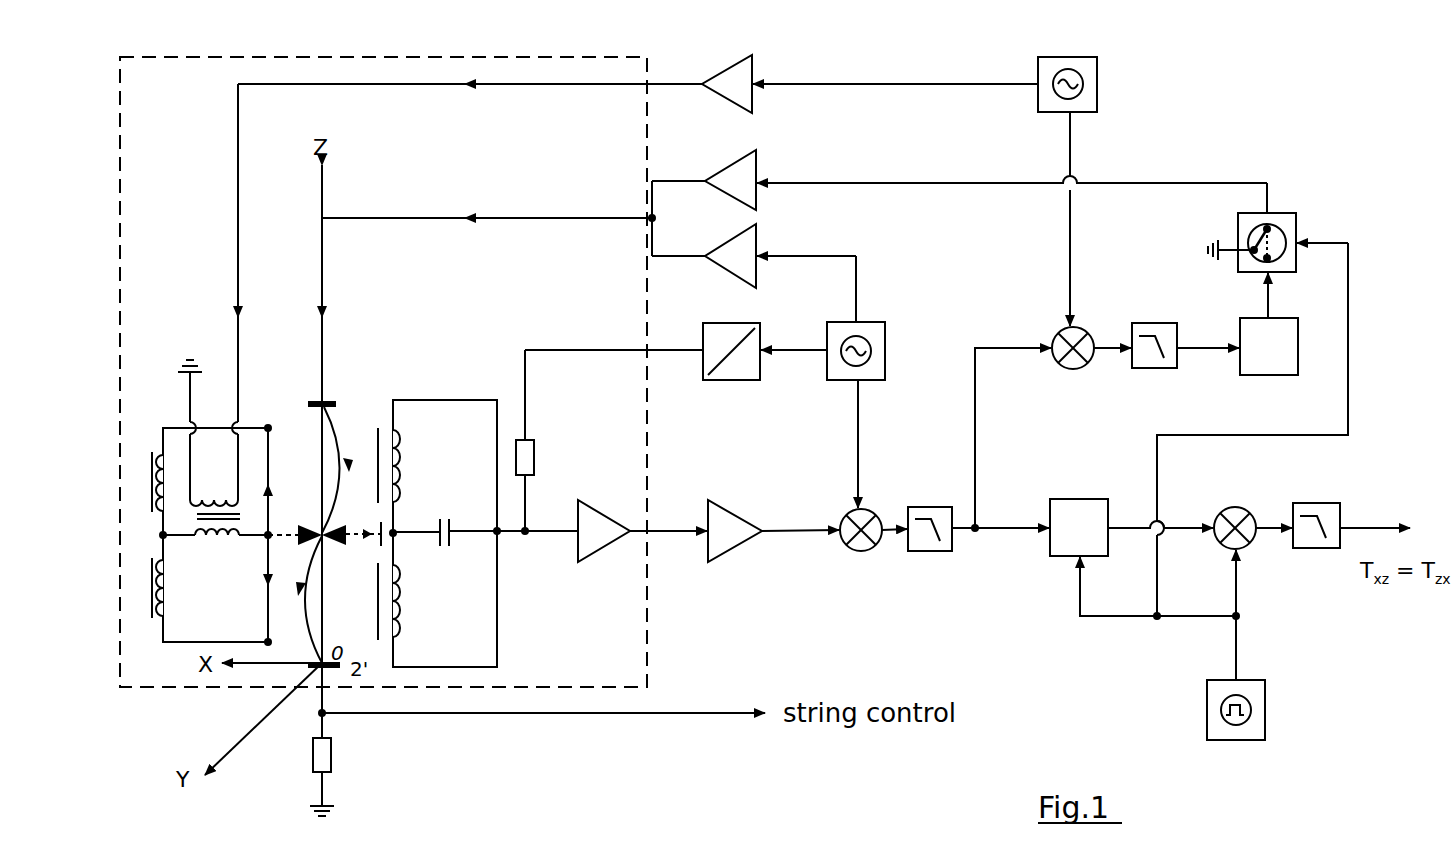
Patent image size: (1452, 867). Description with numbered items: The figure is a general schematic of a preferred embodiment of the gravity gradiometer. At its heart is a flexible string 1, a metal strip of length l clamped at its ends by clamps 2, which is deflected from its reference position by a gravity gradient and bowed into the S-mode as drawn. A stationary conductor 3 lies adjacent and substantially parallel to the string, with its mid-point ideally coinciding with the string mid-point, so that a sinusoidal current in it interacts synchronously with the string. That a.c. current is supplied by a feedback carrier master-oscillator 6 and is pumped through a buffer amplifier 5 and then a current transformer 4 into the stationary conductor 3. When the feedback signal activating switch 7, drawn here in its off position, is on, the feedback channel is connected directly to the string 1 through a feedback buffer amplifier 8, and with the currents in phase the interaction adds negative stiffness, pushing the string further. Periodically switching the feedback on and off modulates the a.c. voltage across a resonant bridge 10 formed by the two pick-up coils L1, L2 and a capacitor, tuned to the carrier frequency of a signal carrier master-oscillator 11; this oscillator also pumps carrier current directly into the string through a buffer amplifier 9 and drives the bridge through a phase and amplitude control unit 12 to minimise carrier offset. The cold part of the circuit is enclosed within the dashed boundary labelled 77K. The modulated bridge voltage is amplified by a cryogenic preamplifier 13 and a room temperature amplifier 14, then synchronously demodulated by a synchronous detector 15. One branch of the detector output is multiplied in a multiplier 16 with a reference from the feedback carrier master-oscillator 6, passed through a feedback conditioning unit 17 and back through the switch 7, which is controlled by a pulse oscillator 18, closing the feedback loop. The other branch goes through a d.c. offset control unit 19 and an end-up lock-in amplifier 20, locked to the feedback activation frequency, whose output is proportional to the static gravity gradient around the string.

The flexible string 1 is at (309, 599).
The clamp 2 is at (323, 463).
The stationary conductor 3 is at (272, 503).
The current transformer 4 is at (212, 555).
The buffer amplifier 5 is at (727, 84).
The feedback carrier master-oscillator 6 is at (1103, 74).
The feedback signal activating switch 7 is at (1300, 220).
The feedback buffer amplifier 8 is at (730, 180).
The buffer amplifier 9 is at (730, 256).
The resonant bridge 10 is at (450, 548).
The signal carrier master-oscillator 11 is at (888, 344).
The phase and amplitude control unit 12 is at (716, 382).
The cryogenic preamplifier 13 is at (604, 531).
The room temperature amplifier 14 is at (735, 531).
The synchronous detector 15 is at (870, 552).
The multiplier 16 is at (1080, 370).
The feedback conditioning unit 17 is at (1269, 346).
The pulse oscillator 18 is at (1268, 706).
The d.c. offset control unit 19 is at (1079, 527).
The end-up lock-in amplifier 20 is at (1243, 505).
The pick-up coil L1 is at (405, 465).
The pick-up coil L2 is at (405, 601).
The cryogenic enclosure 77K is at (383, 372).